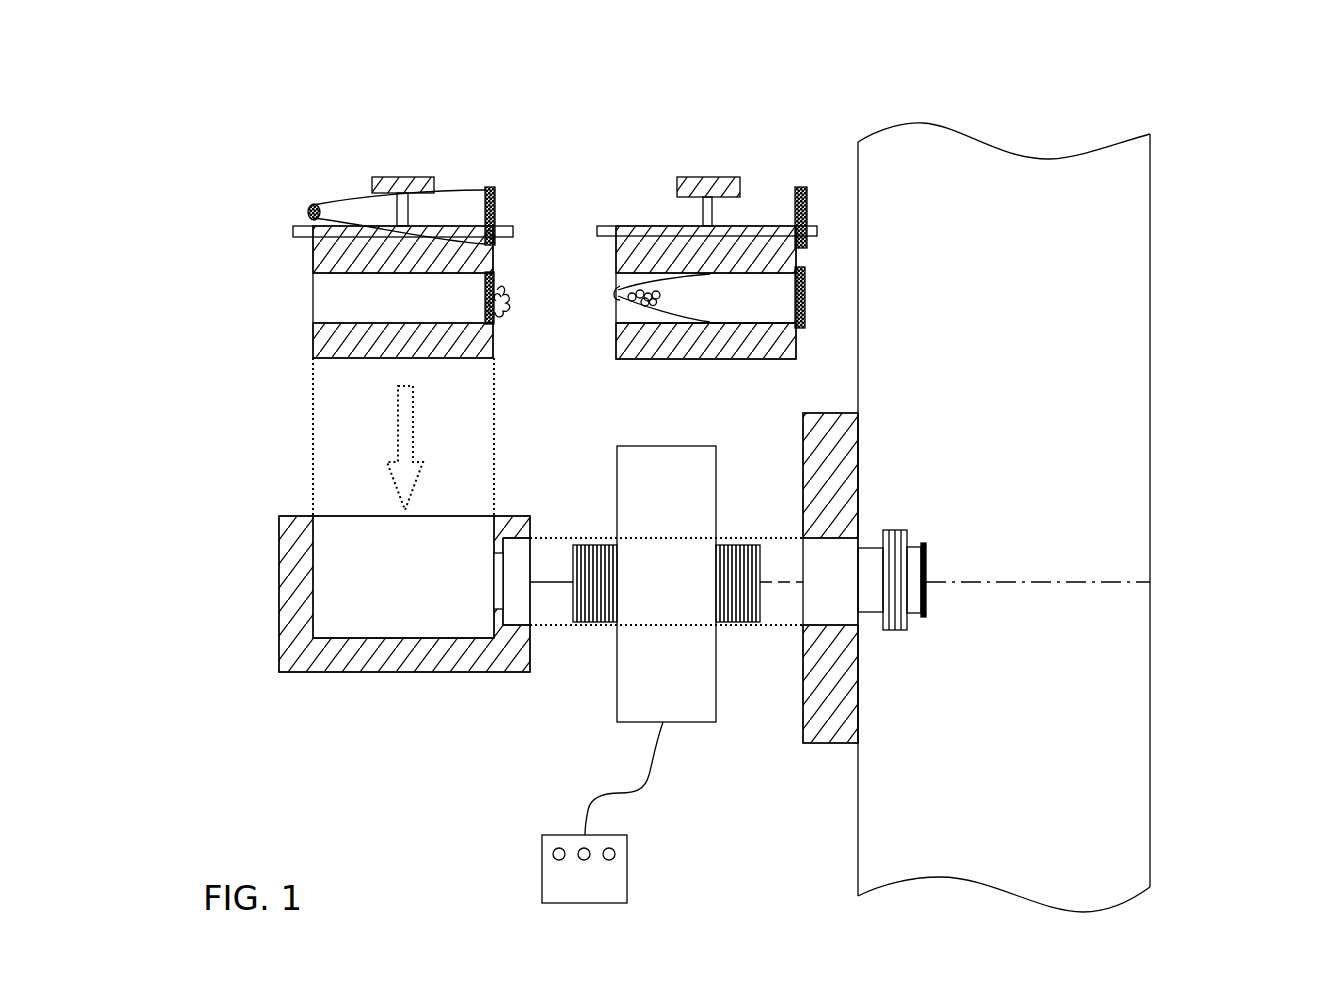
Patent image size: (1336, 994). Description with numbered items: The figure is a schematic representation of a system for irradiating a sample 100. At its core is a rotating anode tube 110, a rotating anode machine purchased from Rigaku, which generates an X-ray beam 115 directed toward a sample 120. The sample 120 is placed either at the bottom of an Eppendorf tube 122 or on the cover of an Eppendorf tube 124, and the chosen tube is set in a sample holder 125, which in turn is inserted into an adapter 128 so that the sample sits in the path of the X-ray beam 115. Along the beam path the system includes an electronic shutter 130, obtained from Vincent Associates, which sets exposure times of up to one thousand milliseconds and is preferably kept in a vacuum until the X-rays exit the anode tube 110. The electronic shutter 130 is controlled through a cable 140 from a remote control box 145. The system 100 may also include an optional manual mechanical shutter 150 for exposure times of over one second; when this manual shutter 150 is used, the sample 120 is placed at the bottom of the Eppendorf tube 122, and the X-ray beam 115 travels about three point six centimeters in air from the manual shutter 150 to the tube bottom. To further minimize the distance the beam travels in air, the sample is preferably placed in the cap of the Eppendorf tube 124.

The system for irradiating a sample 100 is at (790, 103).
The rotating anode tube 110 is at (1127, 224).
The X-ray beam 115 is at (552, 582).
The sample 120 is at (618, 292).
The Eppendorf tube 122 is at (803, 290).
The Eppendorf tube cover 124 is at (462, 188).
The sample holder 125 is at (626, 345).
The adapter 128 is at (296, 605).
The electronic shutter 130 is at (702, 466).
The cable 140 is at (629, 795).
The remote control box 145 is at (567, 875).
The manual mechanical shutter 150 is at (827, 637).